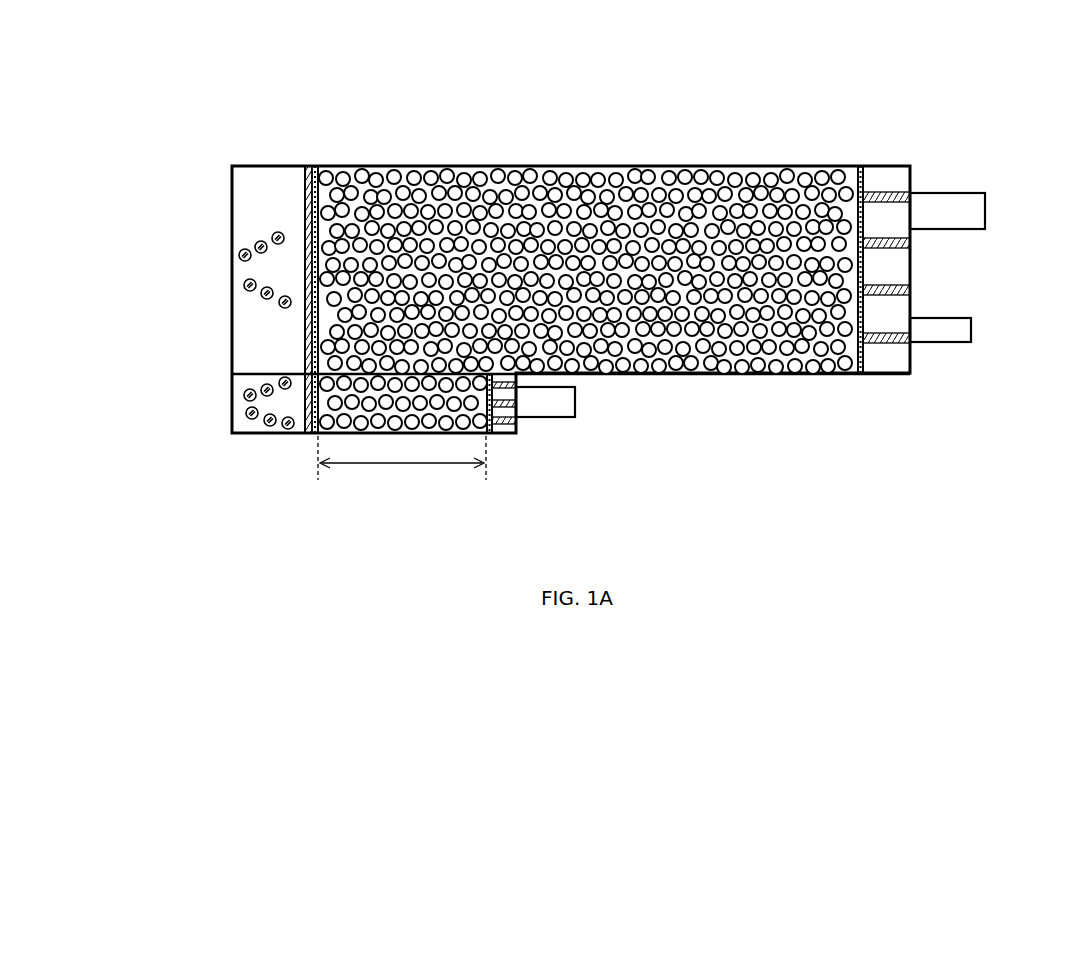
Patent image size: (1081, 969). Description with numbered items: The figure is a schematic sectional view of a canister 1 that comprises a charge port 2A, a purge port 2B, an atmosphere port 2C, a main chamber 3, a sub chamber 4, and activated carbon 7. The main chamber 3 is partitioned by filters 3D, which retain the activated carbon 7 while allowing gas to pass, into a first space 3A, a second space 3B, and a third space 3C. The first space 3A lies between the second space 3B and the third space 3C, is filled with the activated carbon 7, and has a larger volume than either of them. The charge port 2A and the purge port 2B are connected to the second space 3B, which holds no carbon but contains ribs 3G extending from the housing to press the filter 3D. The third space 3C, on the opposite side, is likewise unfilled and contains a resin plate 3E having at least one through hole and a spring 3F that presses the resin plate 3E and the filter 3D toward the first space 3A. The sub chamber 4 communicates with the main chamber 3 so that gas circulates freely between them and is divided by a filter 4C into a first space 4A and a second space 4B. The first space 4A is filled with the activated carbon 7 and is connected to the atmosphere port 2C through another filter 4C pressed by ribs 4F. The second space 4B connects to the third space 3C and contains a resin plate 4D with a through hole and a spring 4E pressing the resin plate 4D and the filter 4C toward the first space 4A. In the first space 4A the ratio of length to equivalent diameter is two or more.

The canister 1 is at (630, 113).
The main chamber 3 is at (389, 166).
The first space 3A is at (330, 175).
The second space 3B is at (896, 257).
The third space 3C is at (243, 207).
The filter 3D is at (312, 172).
The resin plate 3E is at (305, 190).
The spring 3F is at (243, 253).
The ribs 3G is at (885, 345).
The activated carbon 7 is at (445, 183).
The charge port 2A is at (950, 213).
The purge port 2B is at (950, 328).
The atmosphere port 2C is at (560, 403).
The sub chamber 4 is at (371, 436).
The first space 4A is at (338, 435).
The second space 4B is at (247, 390).
The filter 4C is at (312, 435).
The resin plate 4D is at (307, 435).
The spring 4E is at (250, 412).
The ribs 4F is at (516, 422).